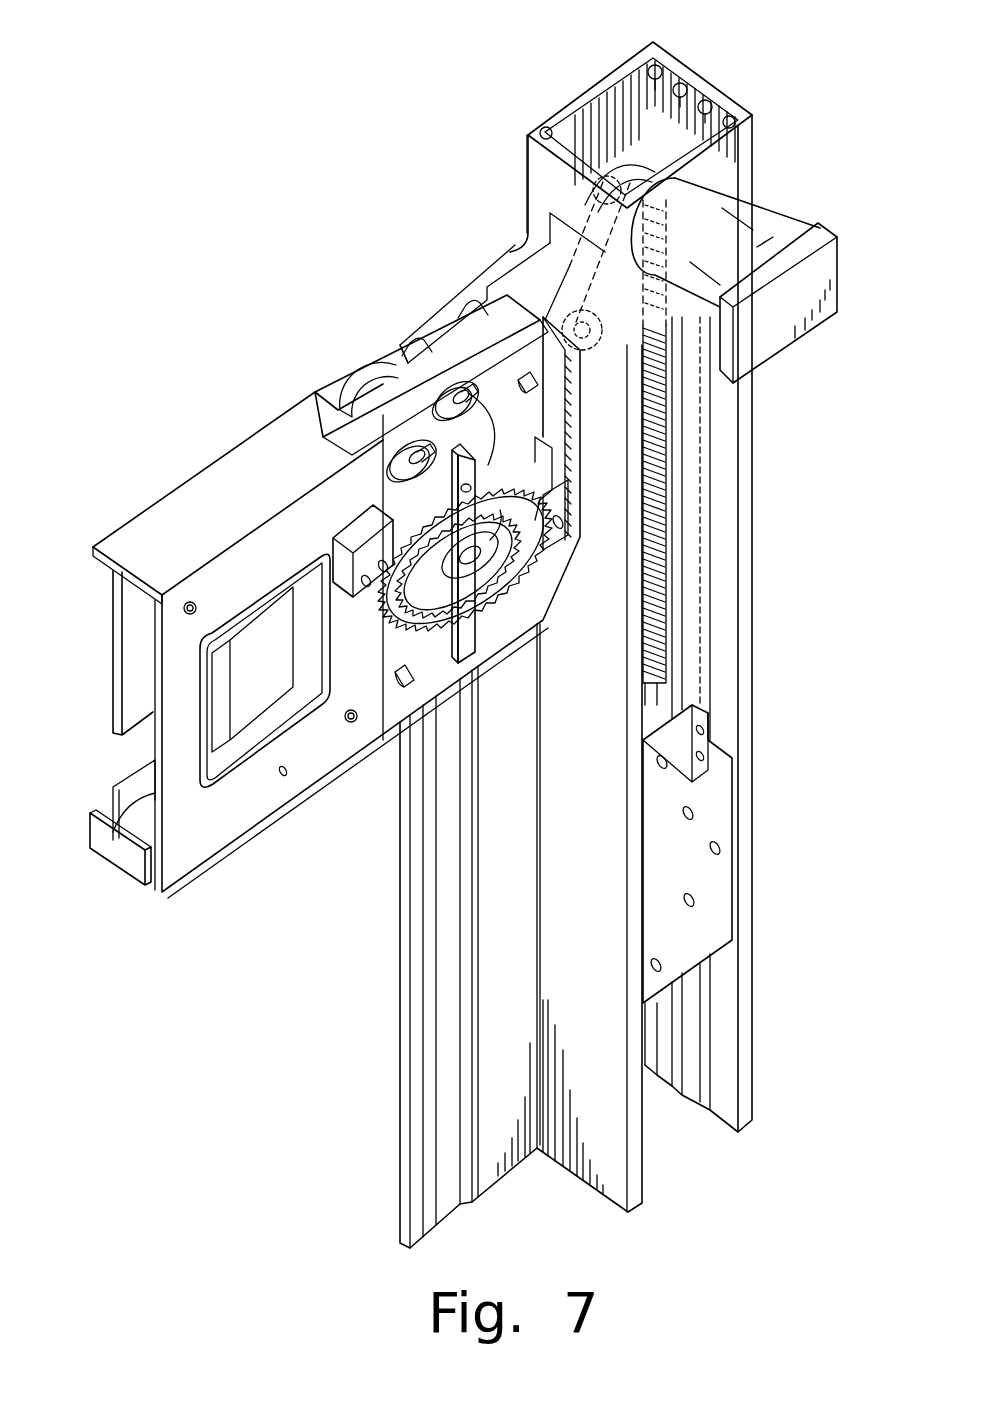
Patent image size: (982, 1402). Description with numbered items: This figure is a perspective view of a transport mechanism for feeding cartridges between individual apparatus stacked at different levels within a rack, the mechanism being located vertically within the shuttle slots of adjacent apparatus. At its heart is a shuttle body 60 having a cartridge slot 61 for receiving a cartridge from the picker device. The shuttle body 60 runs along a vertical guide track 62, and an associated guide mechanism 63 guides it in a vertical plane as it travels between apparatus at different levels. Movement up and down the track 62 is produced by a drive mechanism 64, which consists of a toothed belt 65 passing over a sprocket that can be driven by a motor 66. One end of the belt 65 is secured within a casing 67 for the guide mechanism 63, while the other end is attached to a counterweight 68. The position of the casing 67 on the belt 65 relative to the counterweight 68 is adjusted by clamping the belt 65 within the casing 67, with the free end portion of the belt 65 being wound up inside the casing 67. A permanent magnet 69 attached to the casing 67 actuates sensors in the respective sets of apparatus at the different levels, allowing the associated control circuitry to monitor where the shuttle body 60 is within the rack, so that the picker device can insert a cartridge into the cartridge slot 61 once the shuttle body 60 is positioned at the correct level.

The shuttle body 60 is at (183, 527).
The cartridge slot 61 is at (143, 687).
The vertical guide track 62 is at (445, 953).
The guide mechanism 63 is at (467, 383).
The drive mechanism 64 is at (733, 50).
The toothed belt 65 is at (672, 430).
The motor 66 is at (770, 245).
The casing 67 is at (440, 718).
The counterweight 68 is at (710, 890).
The permanent magnet 69 is at (367, 523).